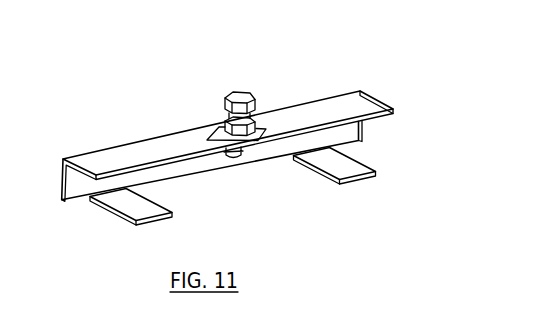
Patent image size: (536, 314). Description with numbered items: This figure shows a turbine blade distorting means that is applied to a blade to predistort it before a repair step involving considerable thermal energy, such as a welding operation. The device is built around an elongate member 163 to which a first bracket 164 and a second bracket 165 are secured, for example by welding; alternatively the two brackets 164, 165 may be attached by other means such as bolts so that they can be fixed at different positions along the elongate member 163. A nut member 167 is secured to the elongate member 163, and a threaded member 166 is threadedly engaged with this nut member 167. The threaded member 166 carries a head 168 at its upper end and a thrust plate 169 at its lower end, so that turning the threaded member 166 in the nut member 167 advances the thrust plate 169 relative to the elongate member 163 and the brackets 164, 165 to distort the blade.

The elongate member 163 is at (261, 94).
The first bracket 164 is at (122, 216).
The second bracket 165 is at (350, 167).
The threaded member 166 is at (221, 124).
The nut member 167 is at (394, 107).
The head 168 is at (233, 92).
The thrust plate 169 is at (228, 154).